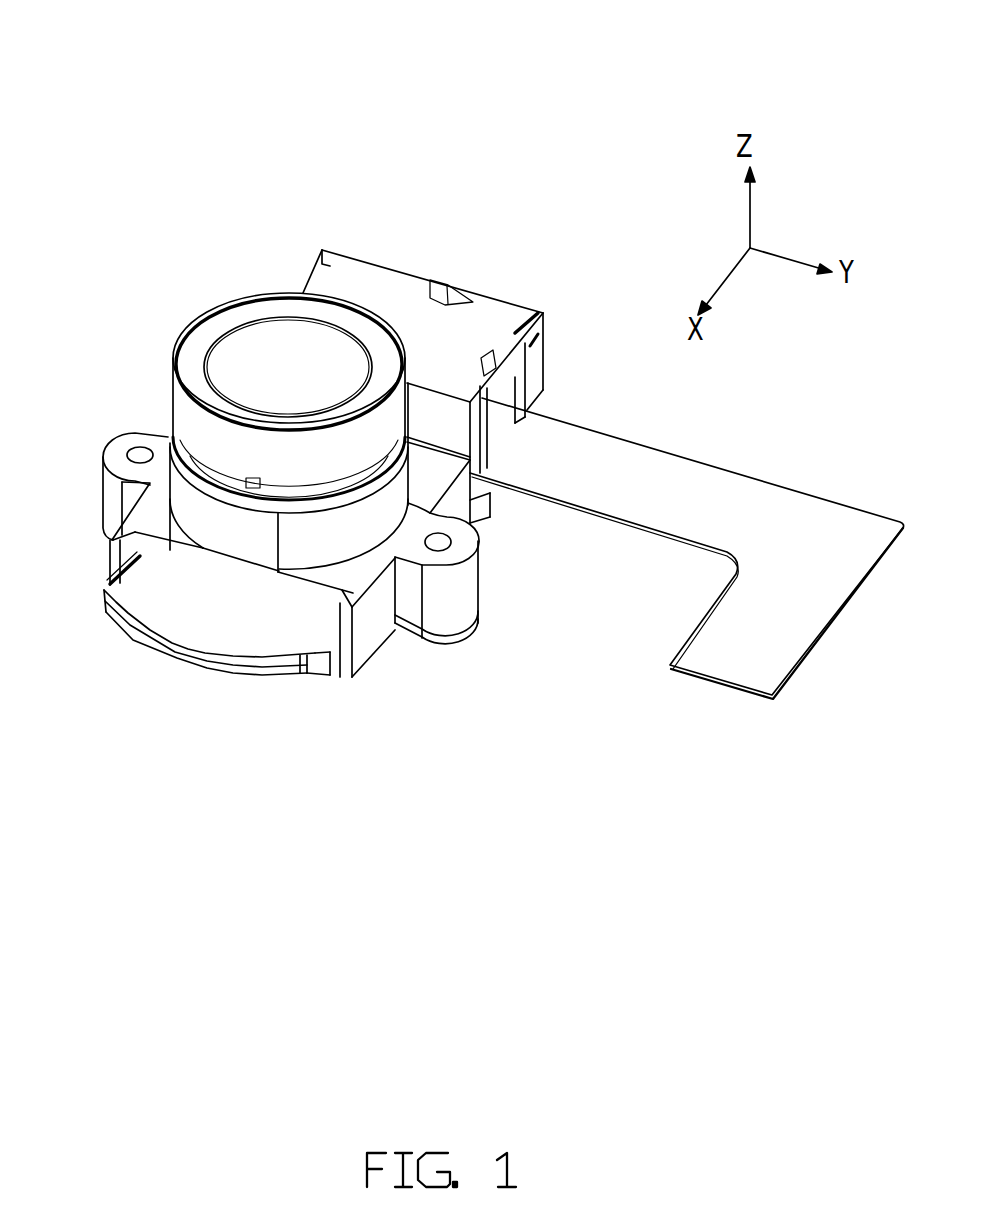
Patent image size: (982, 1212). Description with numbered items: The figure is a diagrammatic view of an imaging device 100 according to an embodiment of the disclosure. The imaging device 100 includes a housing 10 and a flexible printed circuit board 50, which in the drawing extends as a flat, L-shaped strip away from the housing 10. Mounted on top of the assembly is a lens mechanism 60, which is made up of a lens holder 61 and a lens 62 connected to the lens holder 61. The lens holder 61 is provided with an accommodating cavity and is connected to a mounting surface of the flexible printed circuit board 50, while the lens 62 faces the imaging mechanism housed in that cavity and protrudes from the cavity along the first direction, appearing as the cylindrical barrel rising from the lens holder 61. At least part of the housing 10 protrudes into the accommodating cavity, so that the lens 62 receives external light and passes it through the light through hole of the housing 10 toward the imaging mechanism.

The imaging device 100 is at (463, 41).
The housing 10 is at (212, 630).
The flexible printed circuit board 50 is at (638, 462).
The lens mechanism 60 is at (65, 378).
The lens holder 61 is at (227, 523).
The lens 62 is at (190, 422).